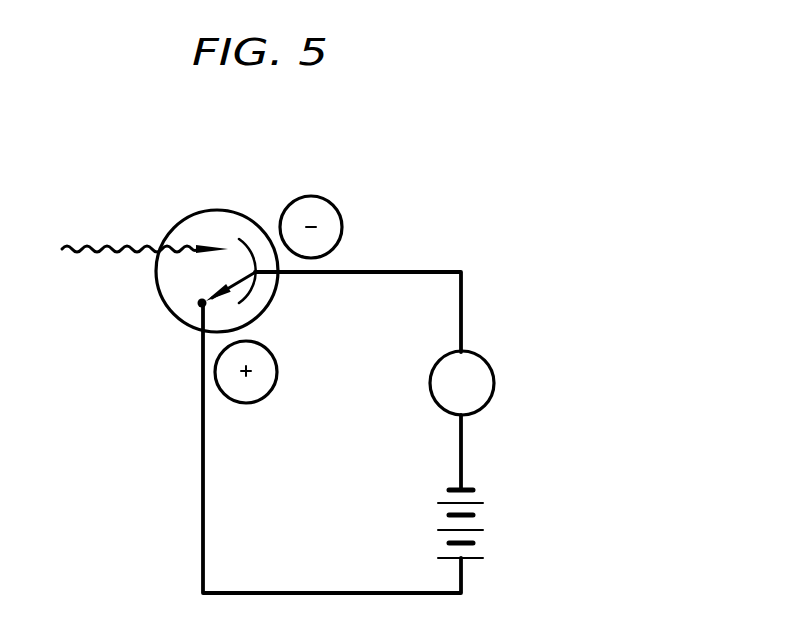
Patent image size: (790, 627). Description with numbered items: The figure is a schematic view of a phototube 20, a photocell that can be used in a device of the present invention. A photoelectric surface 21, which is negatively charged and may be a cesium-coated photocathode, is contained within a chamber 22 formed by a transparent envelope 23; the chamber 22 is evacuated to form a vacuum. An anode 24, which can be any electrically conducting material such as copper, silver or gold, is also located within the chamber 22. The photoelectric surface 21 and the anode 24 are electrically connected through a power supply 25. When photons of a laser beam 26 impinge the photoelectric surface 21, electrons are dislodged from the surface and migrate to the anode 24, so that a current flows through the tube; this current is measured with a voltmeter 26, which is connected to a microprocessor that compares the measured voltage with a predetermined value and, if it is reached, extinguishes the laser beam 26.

The phototube 20 is at (136, 566).
The photoelectric surface 21 is at (240, 300).
The chamber 22 is at (208, 238).
The transparent envelope 23 is at (233, 212).
The anode 24 is at (202, 303).
The power supply 25 is at (473, 517).
The voltmeter / laser beam 26 is at (528, 370).